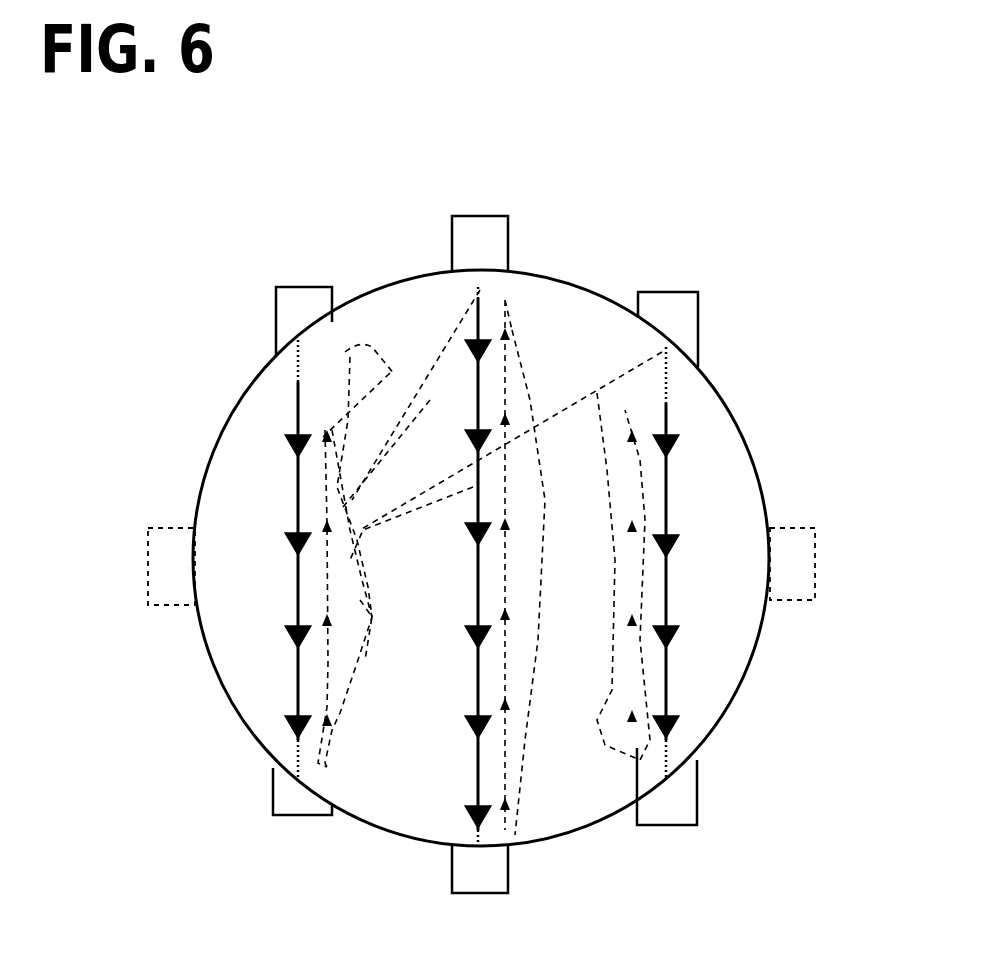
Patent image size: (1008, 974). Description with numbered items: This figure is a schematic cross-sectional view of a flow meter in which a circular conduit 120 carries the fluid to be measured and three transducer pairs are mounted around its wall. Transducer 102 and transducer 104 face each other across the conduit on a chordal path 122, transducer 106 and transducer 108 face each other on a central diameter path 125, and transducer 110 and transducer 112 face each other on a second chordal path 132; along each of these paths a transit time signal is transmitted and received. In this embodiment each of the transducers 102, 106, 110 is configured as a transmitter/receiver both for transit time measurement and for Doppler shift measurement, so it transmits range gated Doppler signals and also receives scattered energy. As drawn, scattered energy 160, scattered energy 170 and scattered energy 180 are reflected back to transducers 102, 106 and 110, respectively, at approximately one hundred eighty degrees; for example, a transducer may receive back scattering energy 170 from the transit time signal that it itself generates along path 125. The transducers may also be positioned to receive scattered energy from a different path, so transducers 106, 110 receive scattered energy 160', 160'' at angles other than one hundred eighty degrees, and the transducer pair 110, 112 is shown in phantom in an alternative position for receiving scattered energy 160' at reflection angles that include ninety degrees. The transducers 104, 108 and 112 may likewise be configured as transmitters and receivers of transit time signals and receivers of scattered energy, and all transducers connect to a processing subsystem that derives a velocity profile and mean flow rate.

The transducer 102 is at (255, 305).
The transducer 104 is at (290, 818).
The transducer 106 is at (435, 232).
The transducer 108 is at (483, 896).
The transducer 110 is at (652, 280).
The transducer 112 is at (147, 572).
The conduit 120 is at (205, 650).
The chordal path 122 is at (296, 418).
The diameter path 125 is at (480, 308).
The chordal path 132 is at (680, 403).
The scattered energy 160 is at (402, 626).
The scattered energy 160' is at (399, 528).
The scattered energy 160'' is at (506, 456).
The scattered energy 170 is at (530, 515).
The scattered energy 180 is at (598, 398).